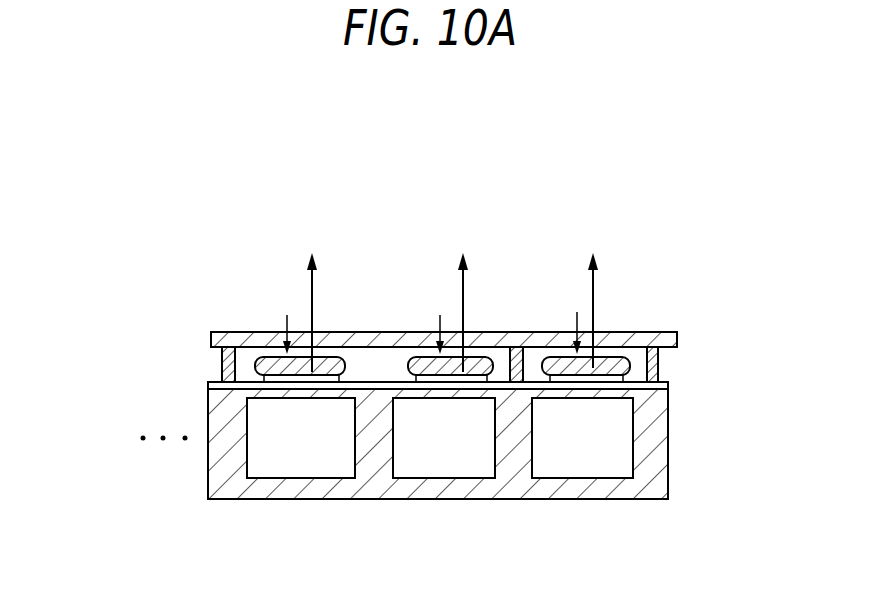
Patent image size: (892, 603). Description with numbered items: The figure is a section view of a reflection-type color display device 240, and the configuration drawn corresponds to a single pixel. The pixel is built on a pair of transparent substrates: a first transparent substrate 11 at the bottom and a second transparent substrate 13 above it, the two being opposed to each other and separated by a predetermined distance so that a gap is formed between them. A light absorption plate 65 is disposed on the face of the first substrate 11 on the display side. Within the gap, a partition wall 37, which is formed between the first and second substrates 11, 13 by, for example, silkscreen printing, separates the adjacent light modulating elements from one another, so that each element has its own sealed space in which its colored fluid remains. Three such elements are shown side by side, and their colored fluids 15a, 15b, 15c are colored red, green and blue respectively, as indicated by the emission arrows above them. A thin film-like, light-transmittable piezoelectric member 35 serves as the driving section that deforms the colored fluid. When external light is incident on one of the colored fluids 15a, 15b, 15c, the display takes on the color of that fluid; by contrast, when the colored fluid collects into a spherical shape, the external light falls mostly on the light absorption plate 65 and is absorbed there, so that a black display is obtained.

The color display device 240 is at (648, 210).
The first transparent substrate 11 is at (228, 472).
The light absorption plate 65 is at (208, 385).
The second transparent substrate 13 is at (211, 334).
The piezoelectric member 35 is at (256, 378).
The partition wall 37 is at (657, 370).
The colored fluid 15a is at (328, 364).
The colored fluid 15b is at (482, 364).
The colored fluid 15c is at (622, 363).